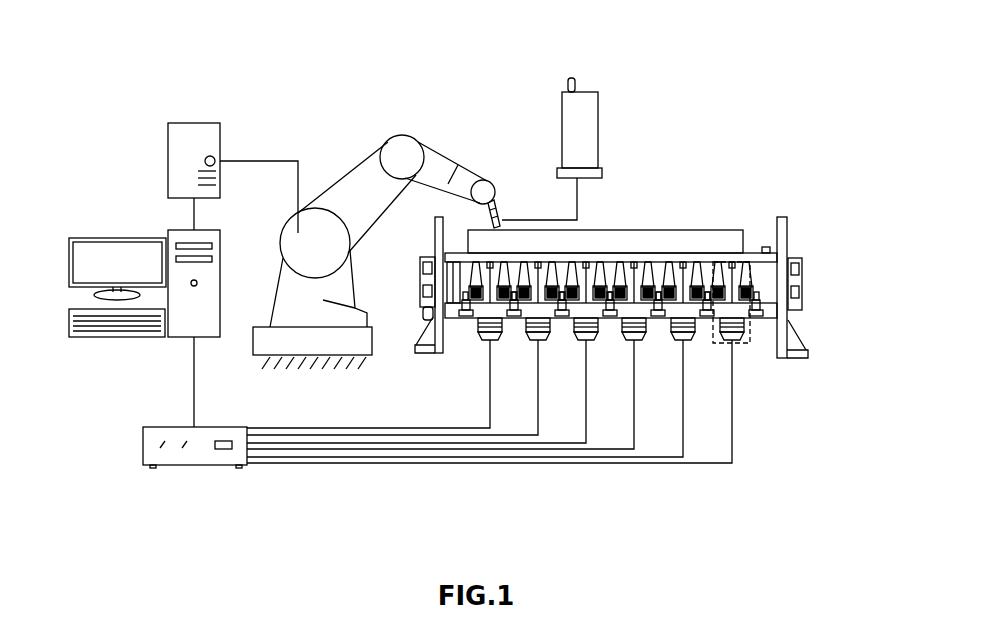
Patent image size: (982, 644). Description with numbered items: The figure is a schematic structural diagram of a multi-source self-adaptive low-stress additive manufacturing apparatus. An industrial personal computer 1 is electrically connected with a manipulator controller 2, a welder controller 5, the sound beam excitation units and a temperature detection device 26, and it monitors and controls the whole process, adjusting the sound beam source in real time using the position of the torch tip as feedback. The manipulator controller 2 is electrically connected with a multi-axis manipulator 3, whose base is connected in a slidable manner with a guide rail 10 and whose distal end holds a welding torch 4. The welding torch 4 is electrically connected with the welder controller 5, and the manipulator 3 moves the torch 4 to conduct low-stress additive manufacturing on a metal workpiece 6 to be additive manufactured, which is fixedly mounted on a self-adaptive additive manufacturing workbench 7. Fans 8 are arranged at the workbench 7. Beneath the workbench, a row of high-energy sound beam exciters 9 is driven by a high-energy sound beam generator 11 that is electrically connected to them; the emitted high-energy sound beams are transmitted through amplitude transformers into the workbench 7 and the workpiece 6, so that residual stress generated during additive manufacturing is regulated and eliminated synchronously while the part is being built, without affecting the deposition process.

The industrial personal computer 1 is at (100, 252).
The manipulator controller 2 is at (290, 147).
The multi-axis manipulator 3 is at (358, 182).
The welding torch 4 is at (497, 213).
The welder controller 5 is at (588, 150).
The metal workpiece to be additive manufactured 6 is at (662, 232).
The self-adaptive additive manufacturing workbench 7 is at (783, 248).
The fan 8 is at (800, 280).
The high-energy sound beam exciter 9 is at (750, 345).
The guide rail 10 is at (337, 340).
The high-energy sound beam generator 11 is at (226, 450).
The temperature detection device 26 is at (767, 247).